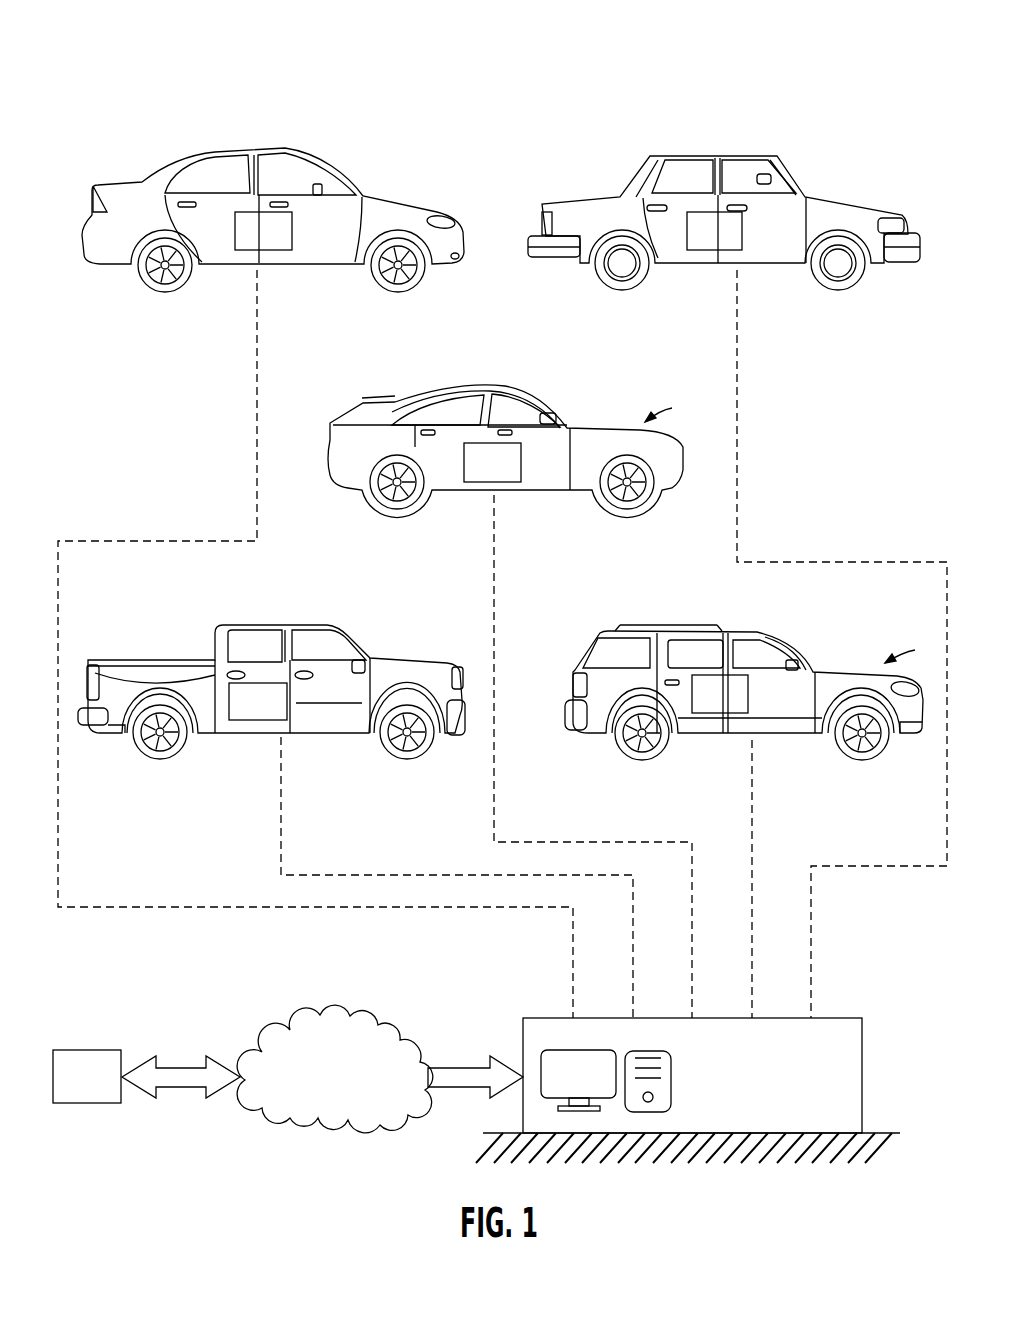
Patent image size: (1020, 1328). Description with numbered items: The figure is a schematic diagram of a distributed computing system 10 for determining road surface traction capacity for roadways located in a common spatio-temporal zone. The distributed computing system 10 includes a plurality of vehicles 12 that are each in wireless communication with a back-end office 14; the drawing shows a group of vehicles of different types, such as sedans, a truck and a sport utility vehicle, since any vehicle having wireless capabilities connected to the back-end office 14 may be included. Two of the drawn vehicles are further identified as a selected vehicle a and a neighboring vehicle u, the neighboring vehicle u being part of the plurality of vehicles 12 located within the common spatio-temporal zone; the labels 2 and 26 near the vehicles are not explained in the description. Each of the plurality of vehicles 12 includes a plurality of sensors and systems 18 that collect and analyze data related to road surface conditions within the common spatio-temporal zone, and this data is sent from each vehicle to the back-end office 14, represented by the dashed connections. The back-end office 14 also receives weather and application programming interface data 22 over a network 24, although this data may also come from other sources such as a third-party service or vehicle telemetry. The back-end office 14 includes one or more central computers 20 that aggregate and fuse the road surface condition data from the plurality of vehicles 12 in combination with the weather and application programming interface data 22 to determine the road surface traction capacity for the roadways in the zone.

The distributed computing system 10 is at (847, 52).
The plurality of vehicles 2 is at (643, 345).
The plurality of vehicles 12 is at (337, 174).
The plurality of sensors and systems 18 is at (278, 244).
The user vehicle 26 is at (847, 598).
The back-end office 14 is at (862, 1086).
The central computers 20 is at (676, 1082).
The weather and application programming interface data 22 is at (102, 1091).
The network 24 is at (349, 1083).